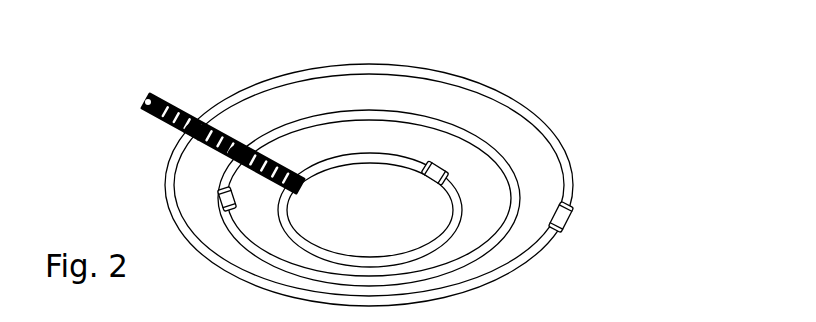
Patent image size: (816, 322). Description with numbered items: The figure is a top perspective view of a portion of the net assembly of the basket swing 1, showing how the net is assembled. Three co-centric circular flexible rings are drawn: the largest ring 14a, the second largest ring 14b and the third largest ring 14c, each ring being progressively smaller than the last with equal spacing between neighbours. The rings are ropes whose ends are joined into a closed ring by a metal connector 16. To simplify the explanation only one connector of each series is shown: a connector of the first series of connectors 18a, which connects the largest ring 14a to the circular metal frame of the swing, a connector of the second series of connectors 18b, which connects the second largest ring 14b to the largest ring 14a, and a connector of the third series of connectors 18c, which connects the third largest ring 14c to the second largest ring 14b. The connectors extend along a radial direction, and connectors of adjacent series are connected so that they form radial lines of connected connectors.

The basket swing 1 is at (596, 67).
The largest ring 14a is at (575, 162).
The second largest ring 14b is at (457, 122).
The third largest ring 14c is at (447, 241).
The metal connector 16 is at (570, 218).
The first series of connectors 18a is at (176, 104).
The second series of connectors 18b is at (231, 139).
The third series of connectors 18c is at (258, 235).